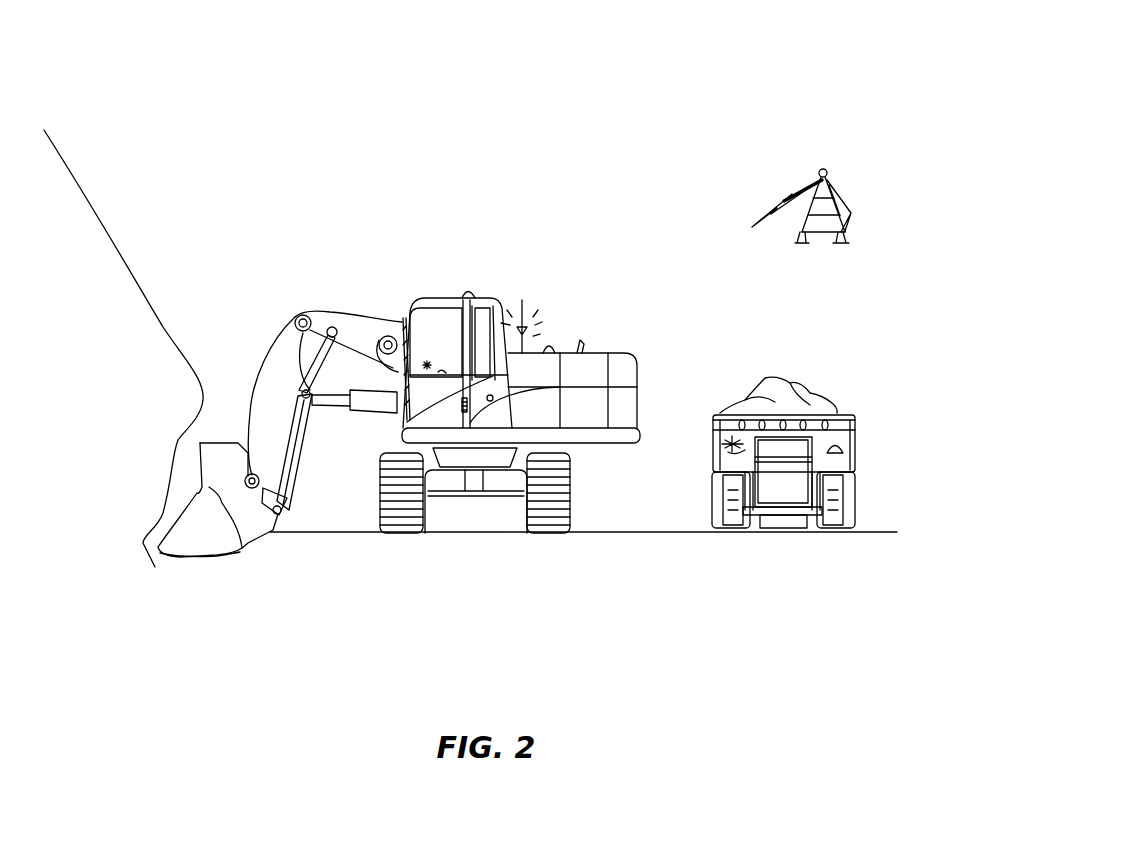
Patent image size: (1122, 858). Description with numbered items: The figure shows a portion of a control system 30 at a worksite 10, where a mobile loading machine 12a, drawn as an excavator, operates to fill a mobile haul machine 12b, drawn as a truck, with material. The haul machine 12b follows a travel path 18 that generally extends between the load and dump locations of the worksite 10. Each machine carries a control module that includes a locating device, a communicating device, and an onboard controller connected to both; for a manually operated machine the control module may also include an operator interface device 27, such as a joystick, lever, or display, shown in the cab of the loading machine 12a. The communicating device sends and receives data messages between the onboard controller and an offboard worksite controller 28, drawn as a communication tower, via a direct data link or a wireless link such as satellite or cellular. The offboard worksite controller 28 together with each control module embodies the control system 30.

The worksite 10 is at (684, 589).
The mobile loading machine 12a is at (626, 363).
The mobile haul machine 12b is at (847, 417).
The travel path 18 is at (883, 532).
The operator interface device 27 is at (427, 365).
The offboard worksite controller 28 is at (823, 170).
The control system 30 is at (861, 53).